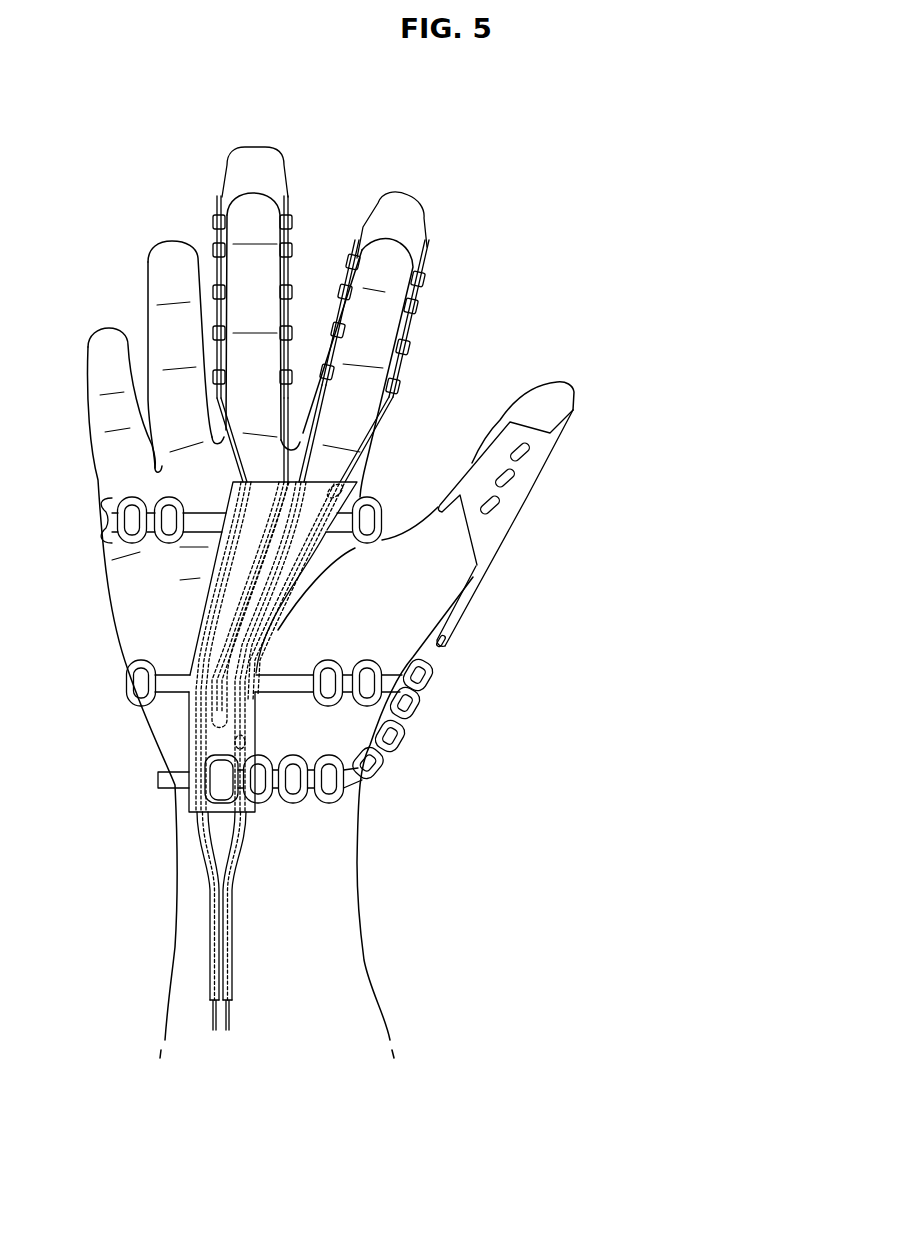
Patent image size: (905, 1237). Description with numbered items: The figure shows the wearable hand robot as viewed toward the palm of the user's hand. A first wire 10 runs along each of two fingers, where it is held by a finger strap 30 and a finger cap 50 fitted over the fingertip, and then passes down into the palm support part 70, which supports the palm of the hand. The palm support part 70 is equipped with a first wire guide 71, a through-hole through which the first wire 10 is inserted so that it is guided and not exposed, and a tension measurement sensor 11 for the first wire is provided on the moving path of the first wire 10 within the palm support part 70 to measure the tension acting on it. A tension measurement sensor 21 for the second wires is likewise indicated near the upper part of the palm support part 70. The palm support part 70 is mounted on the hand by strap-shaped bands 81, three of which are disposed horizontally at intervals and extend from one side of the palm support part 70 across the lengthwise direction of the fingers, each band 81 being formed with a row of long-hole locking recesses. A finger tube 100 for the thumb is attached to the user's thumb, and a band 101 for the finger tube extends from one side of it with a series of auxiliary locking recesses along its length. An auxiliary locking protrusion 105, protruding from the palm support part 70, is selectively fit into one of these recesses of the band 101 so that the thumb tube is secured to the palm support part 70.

The first wire 10 is at (221, 183).
The tension measurement sensor for the first wire 11 is at (235, 738).
The tension measurement sensor for the second wires 21 is at (350, 488).
The finger strap 30 is at (206, 223).
The finger cap 50 is at (270, 143).
The palm support part 70 is at (209, 582).
The first wire guide 71 is at (205, 622).
The band 81 is at (103, 521).
The finger tube for a thumb 100 is at (527, 497).
The band for the finger tube 101 is at (420, 708).
The auxiliary locking protrusion 105 is at (220, 778).